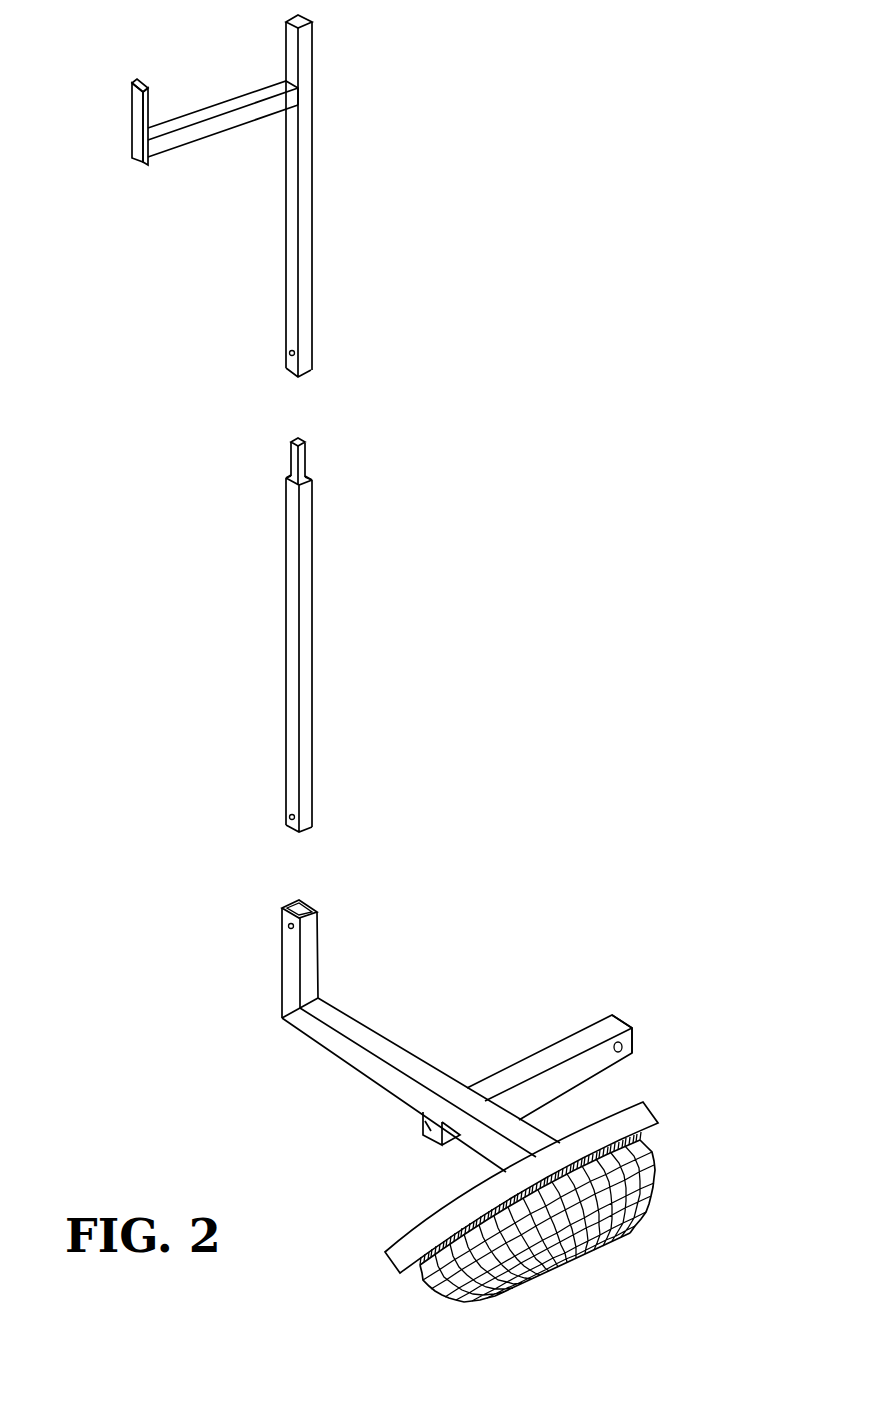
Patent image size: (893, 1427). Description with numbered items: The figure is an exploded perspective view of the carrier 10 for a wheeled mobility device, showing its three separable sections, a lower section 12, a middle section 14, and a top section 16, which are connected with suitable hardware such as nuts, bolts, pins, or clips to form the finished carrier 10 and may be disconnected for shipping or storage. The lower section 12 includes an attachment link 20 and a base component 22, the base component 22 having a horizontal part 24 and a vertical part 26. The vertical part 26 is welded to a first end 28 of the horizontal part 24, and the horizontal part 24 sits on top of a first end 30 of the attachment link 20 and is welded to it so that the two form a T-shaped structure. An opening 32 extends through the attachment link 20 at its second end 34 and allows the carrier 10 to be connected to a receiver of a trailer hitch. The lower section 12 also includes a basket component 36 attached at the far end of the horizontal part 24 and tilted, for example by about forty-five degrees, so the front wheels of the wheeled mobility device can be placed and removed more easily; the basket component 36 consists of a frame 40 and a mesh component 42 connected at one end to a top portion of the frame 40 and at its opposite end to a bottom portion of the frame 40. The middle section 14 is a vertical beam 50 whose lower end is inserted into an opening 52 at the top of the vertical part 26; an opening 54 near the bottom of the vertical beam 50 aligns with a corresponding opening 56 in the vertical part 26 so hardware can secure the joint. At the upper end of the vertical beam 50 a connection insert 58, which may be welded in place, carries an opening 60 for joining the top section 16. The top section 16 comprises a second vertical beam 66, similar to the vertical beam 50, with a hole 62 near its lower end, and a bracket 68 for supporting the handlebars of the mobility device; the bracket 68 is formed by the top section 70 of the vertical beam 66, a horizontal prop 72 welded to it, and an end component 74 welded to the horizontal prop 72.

The carrier 10 is at (577, 386).
The lower section 12 is at (469, 1014).
The middle section 14 is at (350, 604).
The top section 16 is at (210, 231).
The attachment link 20 is at (568, 1047).
The base component 22 is at (341, 997).
The horizontal part 24 is at (331, 1041).
The vertical part 26 is at (288, 960).
The first end of the horizontal part 28 is at (282, 1018).
The first end of the attachment link 30 is at (423, 1135).
The opening 32 is at (624, 1046).
The second end of the attachment link 34 is at (627, 1028).
The basket component 36 is at (415, 1288).
The frame 40 is at (447, 1225).
The mesh component 42 is at (654, 1165).
The vertical beam 50 is at (287, 583).
The opening 52 is at (305, 905).
The opening 54 is at (290, 817).
The opening 56 is at (288, 927).
The connection insert 58 is at (303, 453).
The opening 60 is at (297, 463).
The hole in upper post 62 is at (290, 354).
The second vertical beam 66 is at (305, 153).
The bracket 68 is at (332, 77).
The top section of the vertical beam 70 is at (305, 42).
The horizontal prop 72 is at (252, 98).
The end component 74 is at (136, 104).